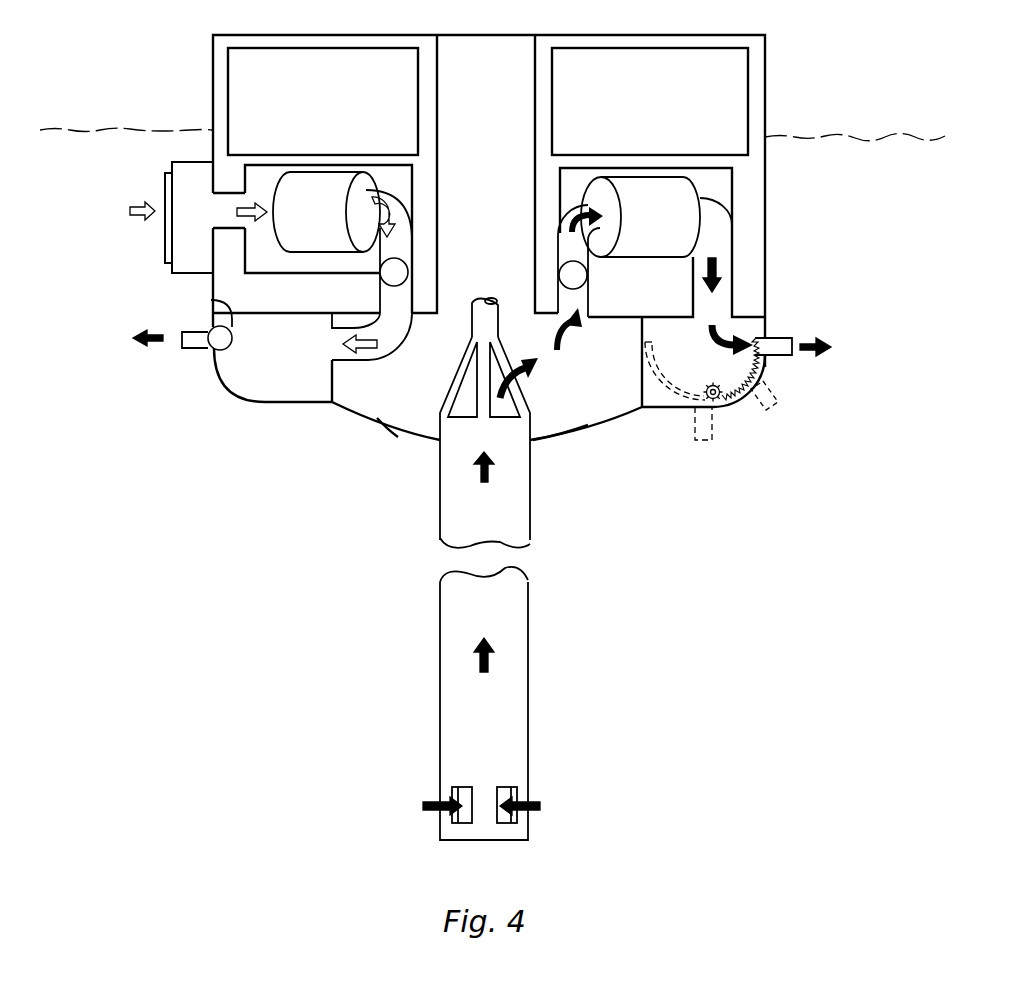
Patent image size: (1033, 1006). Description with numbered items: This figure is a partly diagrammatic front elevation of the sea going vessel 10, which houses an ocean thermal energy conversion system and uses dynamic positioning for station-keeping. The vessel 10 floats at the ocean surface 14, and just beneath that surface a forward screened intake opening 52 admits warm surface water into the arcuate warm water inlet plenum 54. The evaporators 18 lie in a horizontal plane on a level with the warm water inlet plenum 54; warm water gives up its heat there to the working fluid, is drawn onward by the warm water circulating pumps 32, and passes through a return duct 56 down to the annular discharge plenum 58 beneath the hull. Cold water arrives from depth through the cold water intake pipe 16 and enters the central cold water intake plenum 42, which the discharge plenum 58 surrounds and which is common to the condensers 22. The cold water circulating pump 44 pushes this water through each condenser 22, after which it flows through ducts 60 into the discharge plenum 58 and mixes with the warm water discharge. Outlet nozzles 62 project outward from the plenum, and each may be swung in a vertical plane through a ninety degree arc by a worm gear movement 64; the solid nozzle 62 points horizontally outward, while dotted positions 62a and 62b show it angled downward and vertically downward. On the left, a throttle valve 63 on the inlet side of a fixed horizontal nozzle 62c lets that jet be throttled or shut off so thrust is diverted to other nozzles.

The vessel 10 is at (579, 19).
The ocean surface 14 is at (918, 127).
The cold water intake pipe 16 is at (529, 631).
The evaporator 18 is at (333, 178).
The condenser 22 is at (641, 182).
The warm water circulating pump 32 is at (408, 270).
The cold water intake plenum 42 is at (573, 438).
The cold water circulating pump 44 is at (558, 275).
The screened intake opening 52 is at (164, 247).
The warm water inlet plenum 54 is at (190, 161).
The return conduit 56 is at (378, 297).
The discharge plenum 58 is at (653, 408).
The ducts 60 is at (727, 247).
The outlet nozzle 62 is at (775, 337).
The outlet nozzle in second position 62a is at (768, 395).
The outlet nozzle in third position 62b is at (713, 427).
The fixed horizontal nozzle 62c is at (193, 348).
The throttle valve 63 is at (211, 300).
The worm gear movement 64 is at (713, 383).